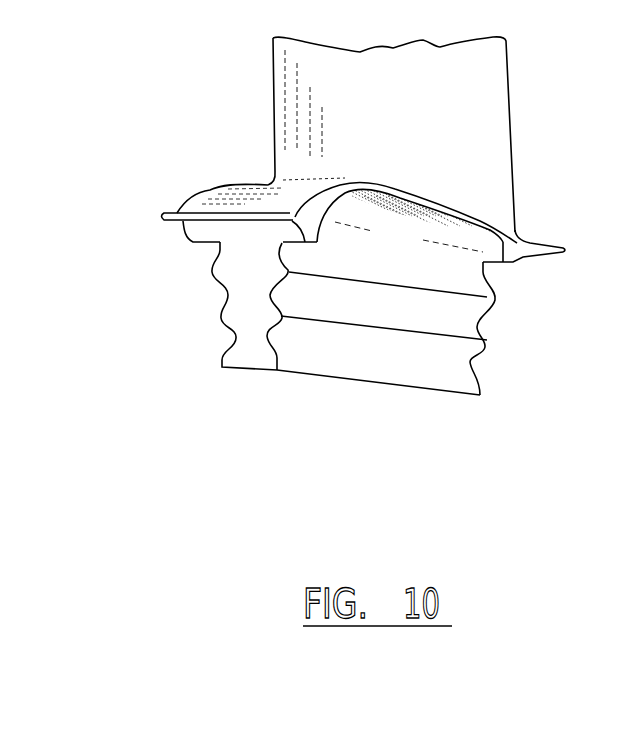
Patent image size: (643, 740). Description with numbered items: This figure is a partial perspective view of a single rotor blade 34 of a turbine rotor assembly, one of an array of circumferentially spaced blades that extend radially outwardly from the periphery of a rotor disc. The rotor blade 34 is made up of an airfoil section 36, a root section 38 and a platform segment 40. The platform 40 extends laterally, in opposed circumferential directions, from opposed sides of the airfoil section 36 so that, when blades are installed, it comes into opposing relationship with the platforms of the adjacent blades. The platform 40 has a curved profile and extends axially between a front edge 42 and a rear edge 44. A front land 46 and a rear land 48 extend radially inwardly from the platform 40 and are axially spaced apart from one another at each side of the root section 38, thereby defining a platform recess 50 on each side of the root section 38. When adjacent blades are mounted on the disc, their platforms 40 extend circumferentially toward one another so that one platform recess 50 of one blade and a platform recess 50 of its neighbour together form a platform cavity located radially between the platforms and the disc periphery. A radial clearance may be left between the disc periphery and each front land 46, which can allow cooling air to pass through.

The rotor blade 34 is at (273, 132).
The airfoil section 36 is at (273, 82).
The root section 38 is at (443, 372).
The platform segment 40 is at (224, 183).
The front edge 42 is at (162, 217).
The rear edge 44 is at (565, 248).
The front land 46 is at (197, 246).
The rear land 48 is at (512, 262).
The platform recess 50 is at (412, 237).